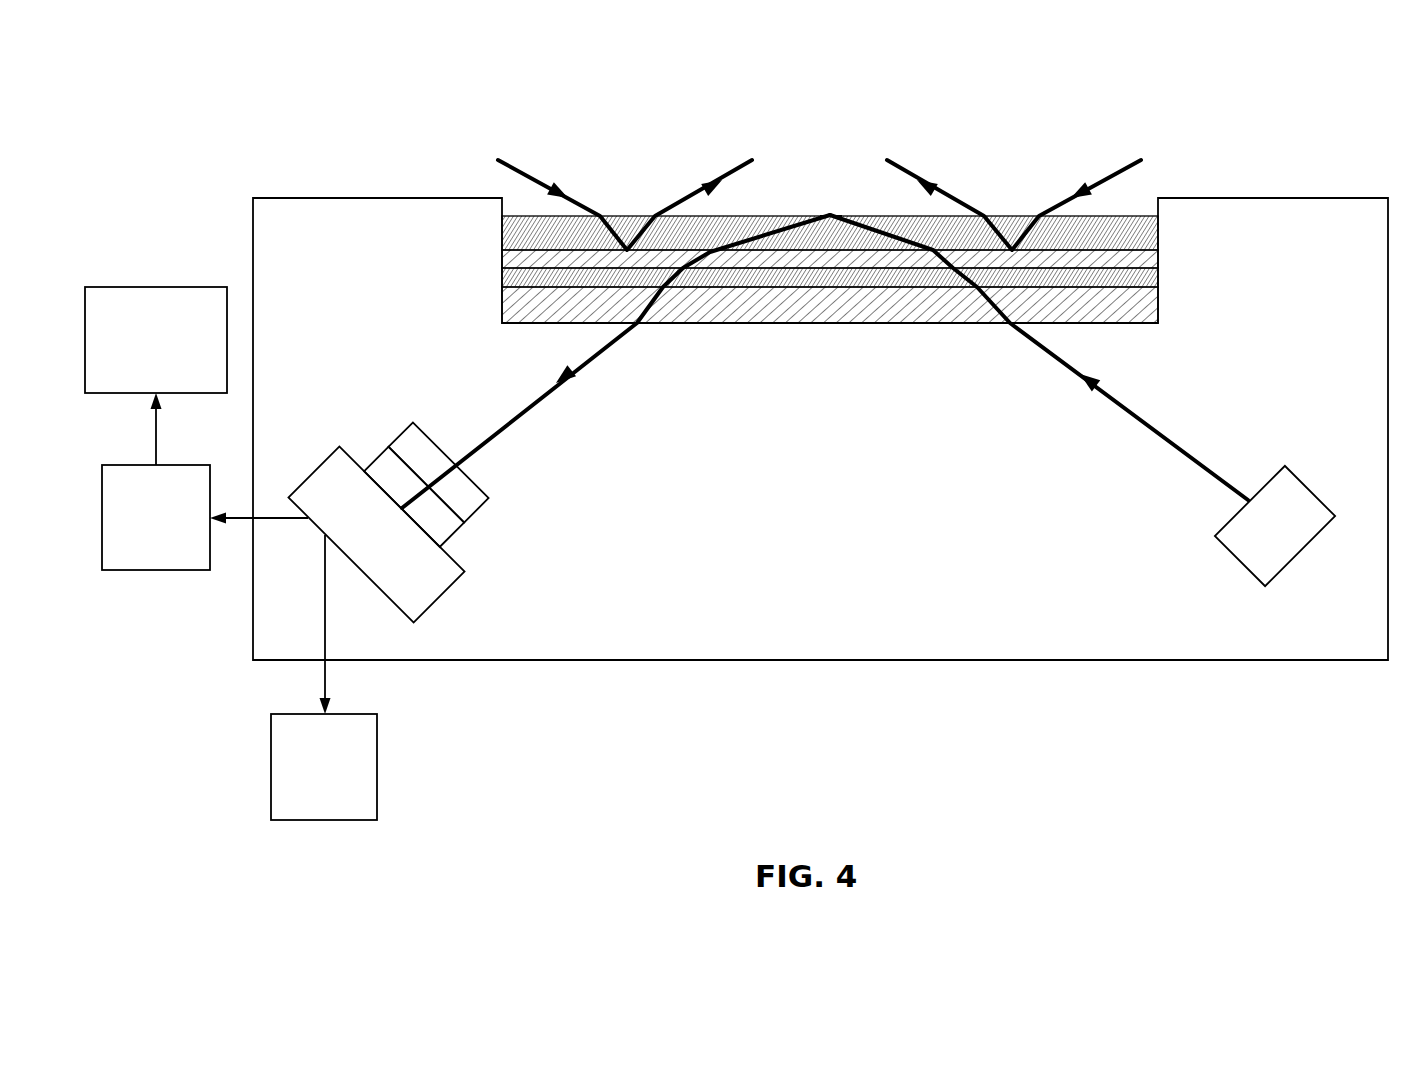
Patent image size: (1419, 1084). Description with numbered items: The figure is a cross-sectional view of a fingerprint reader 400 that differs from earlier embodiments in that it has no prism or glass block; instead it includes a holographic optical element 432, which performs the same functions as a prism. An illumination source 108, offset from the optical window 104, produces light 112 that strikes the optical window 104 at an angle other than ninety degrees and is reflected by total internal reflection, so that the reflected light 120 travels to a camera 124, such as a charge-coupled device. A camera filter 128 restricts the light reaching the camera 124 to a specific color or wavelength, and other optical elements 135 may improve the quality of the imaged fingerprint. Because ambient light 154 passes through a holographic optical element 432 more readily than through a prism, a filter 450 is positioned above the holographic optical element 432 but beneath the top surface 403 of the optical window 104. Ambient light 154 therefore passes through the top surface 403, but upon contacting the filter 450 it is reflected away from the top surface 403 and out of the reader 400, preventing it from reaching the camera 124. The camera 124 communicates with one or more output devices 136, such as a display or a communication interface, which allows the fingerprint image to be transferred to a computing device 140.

The reader 400 is at (1290, 180).
The optical window 104 is at (1168, 222).
The filter 450 is at (1160, 254).
The holographic optical element 432 is at (1160, 282).
The top surface 403 is at (803, 208).
The ambient light 154 is at (576, 199).
The light 112 is at (1147, 418).
The reflected light 120 is at (506, 417).
The camera 124 is at (376, 534).
The optical elements 135 is at (367, 467).
The camera filter 128 is at (483, 507).
The illumination source 108 is at (1275, 526).
The output device 136 is at (239, 642).
The computing device 140 is at (156, 340).